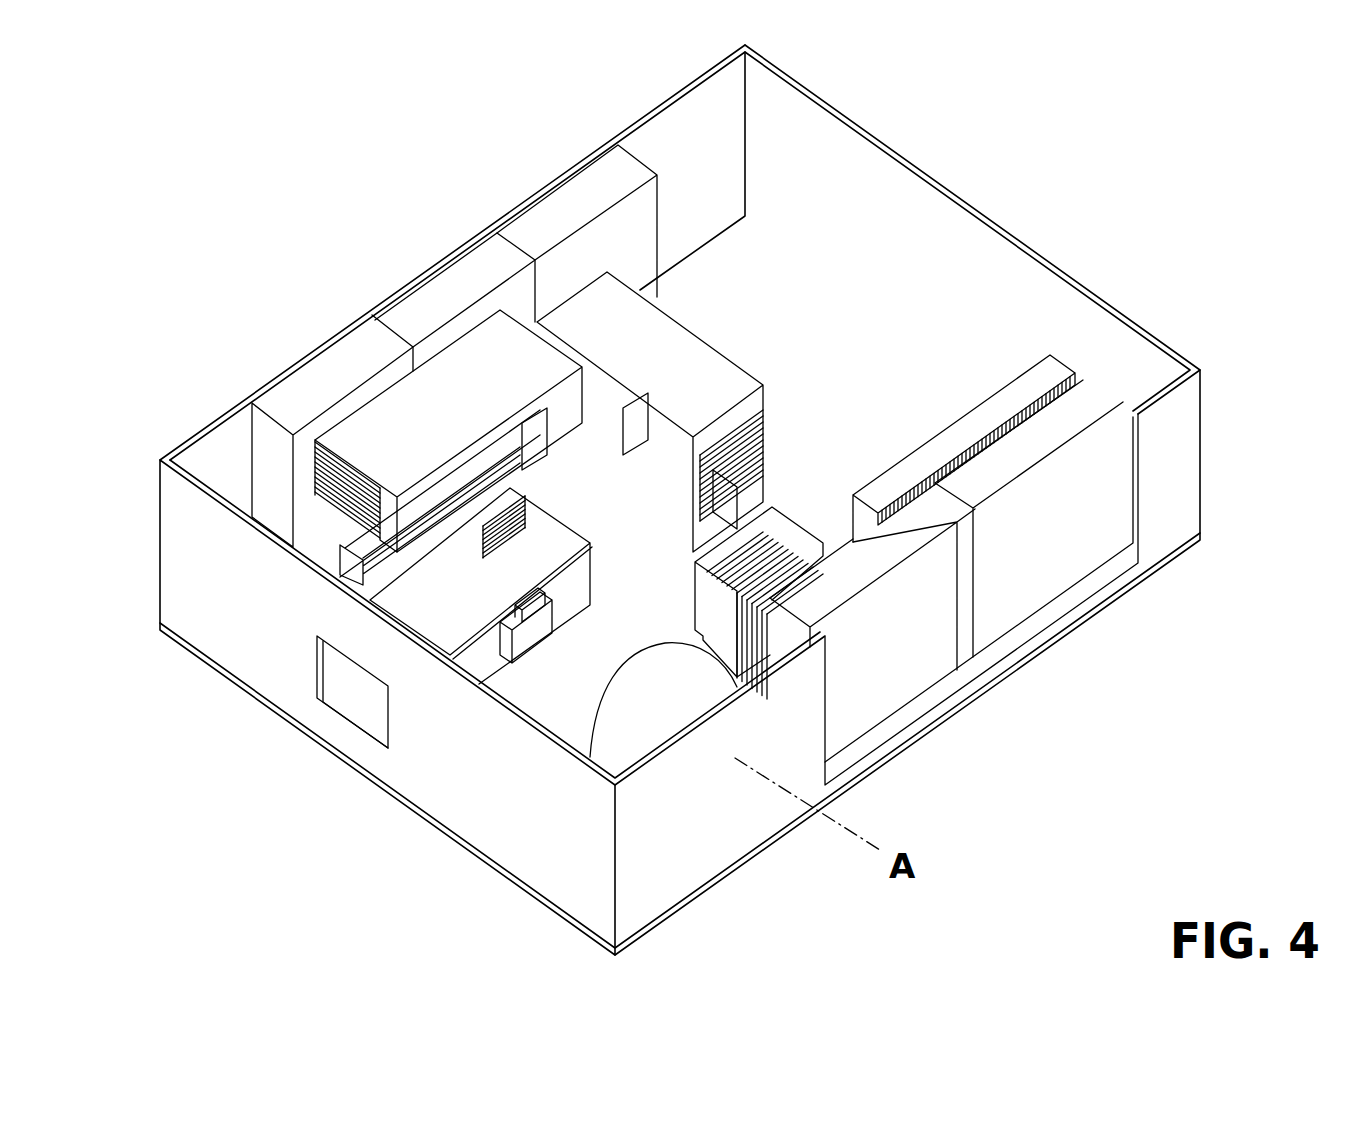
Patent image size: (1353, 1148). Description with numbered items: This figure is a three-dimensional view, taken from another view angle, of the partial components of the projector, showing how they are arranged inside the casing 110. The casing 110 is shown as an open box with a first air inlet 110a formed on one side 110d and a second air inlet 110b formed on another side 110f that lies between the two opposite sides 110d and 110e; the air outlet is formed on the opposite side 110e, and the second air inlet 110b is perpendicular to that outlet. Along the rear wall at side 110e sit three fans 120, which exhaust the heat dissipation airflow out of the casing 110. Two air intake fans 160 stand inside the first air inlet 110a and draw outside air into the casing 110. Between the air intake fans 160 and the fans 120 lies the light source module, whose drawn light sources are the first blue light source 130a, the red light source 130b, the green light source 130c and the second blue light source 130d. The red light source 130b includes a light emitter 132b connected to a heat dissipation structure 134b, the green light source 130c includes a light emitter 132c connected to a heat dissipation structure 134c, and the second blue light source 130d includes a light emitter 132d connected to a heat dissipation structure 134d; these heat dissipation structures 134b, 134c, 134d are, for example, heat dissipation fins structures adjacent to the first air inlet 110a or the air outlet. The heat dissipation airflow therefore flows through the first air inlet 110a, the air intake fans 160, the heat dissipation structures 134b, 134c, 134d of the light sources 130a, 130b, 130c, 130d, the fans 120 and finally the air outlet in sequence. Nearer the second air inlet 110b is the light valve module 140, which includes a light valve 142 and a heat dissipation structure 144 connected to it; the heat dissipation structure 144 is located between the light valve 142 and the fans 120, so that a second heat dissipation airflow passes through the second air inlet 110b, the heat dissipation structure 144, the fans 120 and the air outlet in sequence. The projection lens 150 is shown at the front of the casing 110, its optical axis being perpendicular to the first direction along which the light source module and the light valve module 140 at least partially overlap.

The casing 110 is at (676, 127).
The first air inlet 110a is at (1140, 526).
The second air inlet 110b is at (352, 724).
The side of the casing 110d is at (741, 798).
The side of the casing 110e is at (325, 325).
The side of the casing 110f is at (238, 642).
The fan 120 is at (533, 223).
The first blue light source 130a is at (800, 576).
The red light source 130b is at (972, 359).
The green light source 130c is at (825, 318).
The second blue light source 130d is at (332, 419).
The light emitter 132b is at (722, 500).
The light emitter 132c is at (637, 435).
The light emitter 132d is at (515, 420).
The heat dissipation structure 134b is at (1062, 368).
The heat dissipation structure 134c is at (653, 333).
The heat dissipation structure 134d is at (435, 443).
The light valve module 140 is at (453, 710).
The light valve 142 is at (533, 637).
The heat dissipation structure 144 is at (440, 615).
The projection lens 150 is at (645, 742).
The air intake fan 160 is at (1020, 582).